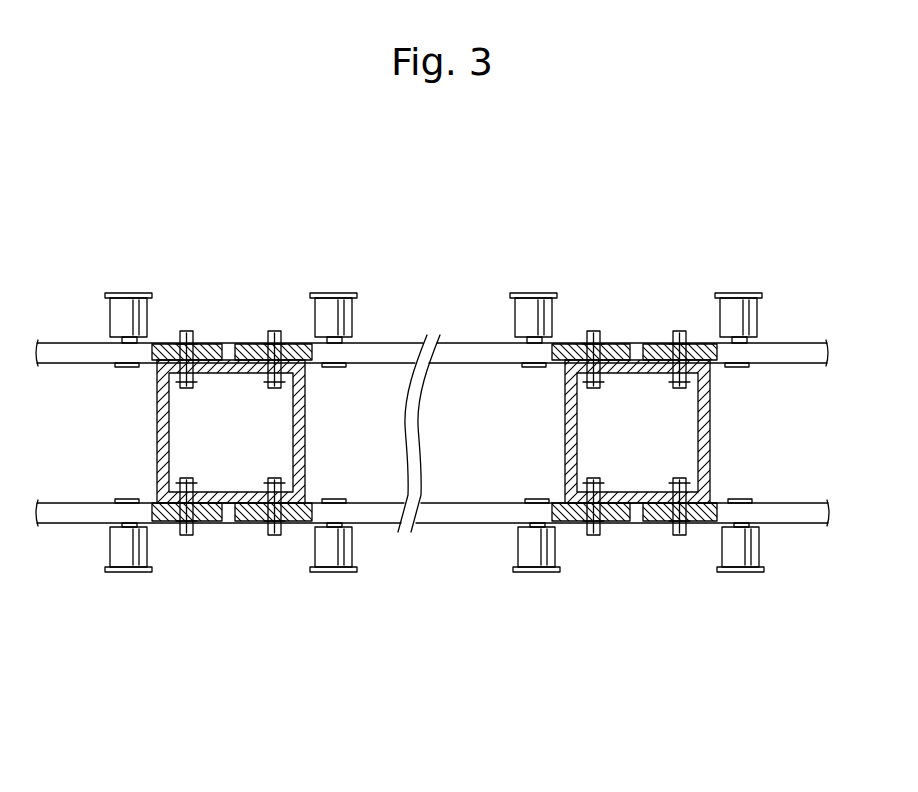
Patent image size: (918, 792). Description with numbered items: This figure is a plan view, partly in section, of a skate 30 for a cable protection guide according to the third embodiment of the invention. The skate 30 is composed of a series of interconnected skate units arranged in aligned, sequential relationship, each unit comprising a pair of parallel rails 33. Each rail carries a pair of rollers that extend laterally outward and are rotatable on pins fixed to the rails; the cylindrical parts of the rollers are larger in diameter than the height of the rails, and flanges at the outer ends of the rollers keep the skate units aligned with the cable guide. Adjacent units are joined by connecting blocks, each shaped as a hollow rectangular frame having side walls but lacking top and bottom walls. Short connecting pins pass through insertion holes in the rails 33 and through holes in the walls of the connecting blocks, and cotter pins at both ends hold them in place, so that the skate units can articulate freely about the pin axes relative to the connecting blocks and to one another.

The skate 30 is at (376, 611).
The rail 33 is at (812, 512).